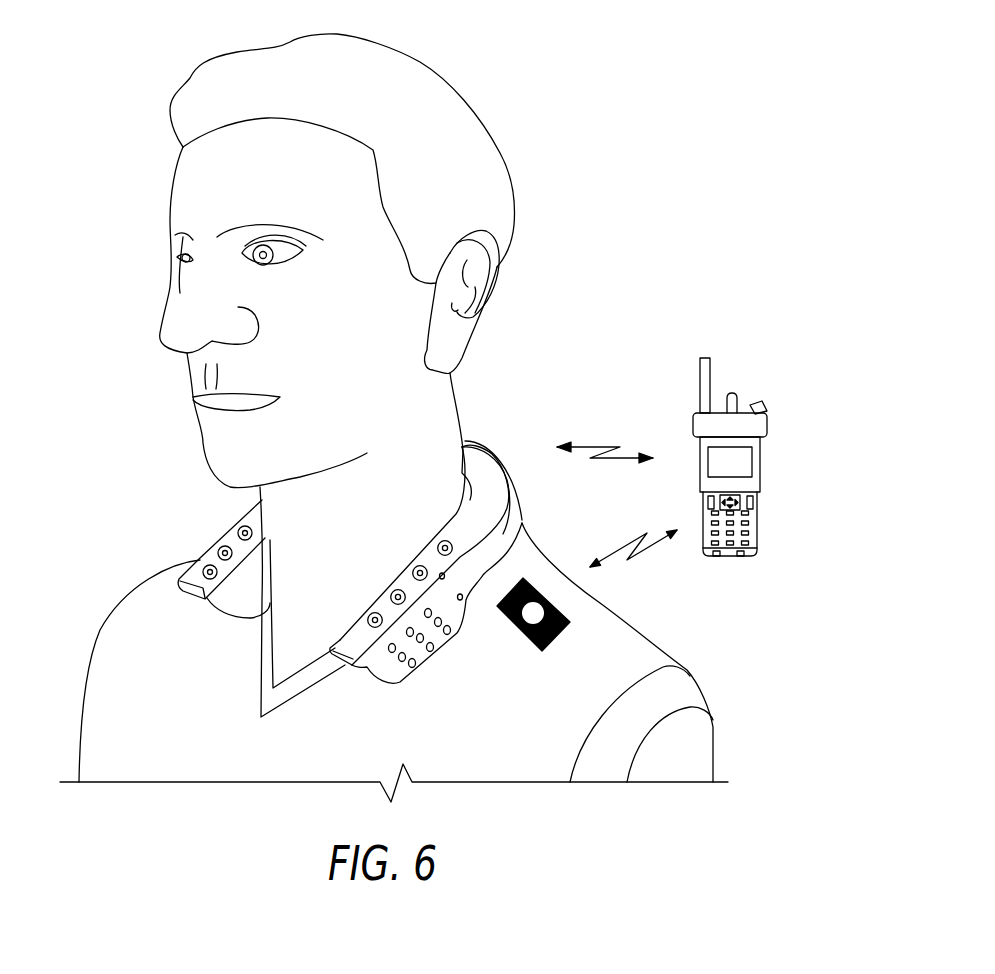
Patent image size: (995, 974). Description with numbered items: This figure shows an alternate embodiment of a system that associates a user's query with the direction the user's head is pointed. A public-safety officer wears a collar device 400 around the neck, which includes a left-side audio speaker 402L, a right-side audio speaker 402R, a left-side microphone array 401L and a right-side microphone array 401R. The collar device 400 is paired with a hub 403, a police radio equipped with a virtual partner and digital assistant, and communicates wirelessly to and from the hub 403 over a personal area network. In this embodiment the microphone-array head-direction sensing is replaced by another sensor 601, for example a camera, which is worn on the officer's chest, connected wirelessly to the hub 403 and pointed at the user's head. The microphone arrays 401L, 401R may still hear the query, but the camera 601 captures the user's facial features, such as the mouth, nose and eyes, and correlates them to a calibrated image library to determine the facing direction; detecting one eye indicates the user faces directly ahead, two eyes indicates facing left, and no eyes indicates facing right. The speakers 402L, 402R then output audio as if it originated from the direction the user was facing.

The collar device 400 is at (327, 600).
The right-side microphone array 401R is at (200, 563).
The left-side microphone array 401L is at (376, 627).
The right-side audio speaker 402R is at (236, 588).
The left-side audio speaker 402L is at (437, 650).
The hub 403 is at (767, 412).
The sensor 601 is at (555, 637).